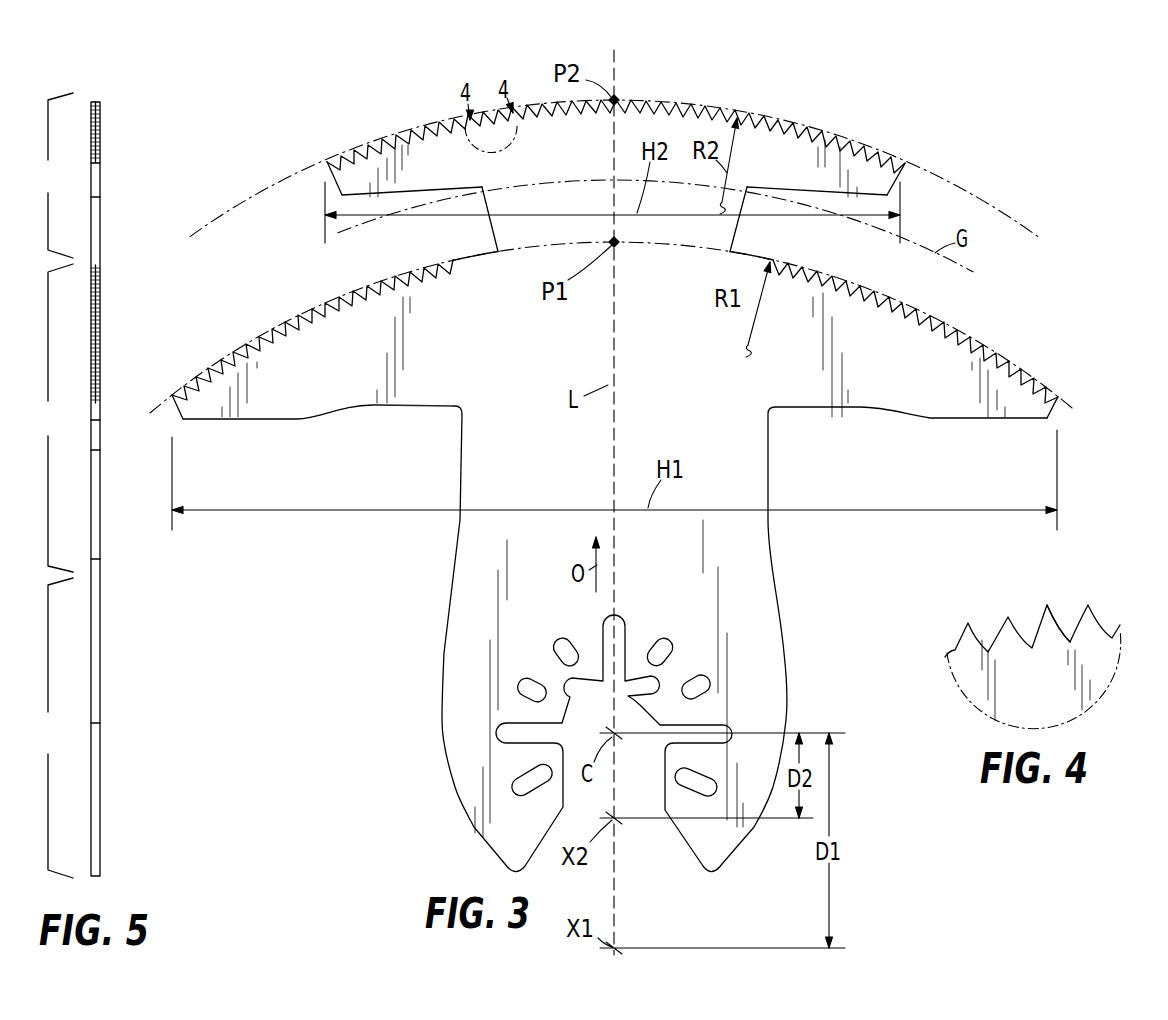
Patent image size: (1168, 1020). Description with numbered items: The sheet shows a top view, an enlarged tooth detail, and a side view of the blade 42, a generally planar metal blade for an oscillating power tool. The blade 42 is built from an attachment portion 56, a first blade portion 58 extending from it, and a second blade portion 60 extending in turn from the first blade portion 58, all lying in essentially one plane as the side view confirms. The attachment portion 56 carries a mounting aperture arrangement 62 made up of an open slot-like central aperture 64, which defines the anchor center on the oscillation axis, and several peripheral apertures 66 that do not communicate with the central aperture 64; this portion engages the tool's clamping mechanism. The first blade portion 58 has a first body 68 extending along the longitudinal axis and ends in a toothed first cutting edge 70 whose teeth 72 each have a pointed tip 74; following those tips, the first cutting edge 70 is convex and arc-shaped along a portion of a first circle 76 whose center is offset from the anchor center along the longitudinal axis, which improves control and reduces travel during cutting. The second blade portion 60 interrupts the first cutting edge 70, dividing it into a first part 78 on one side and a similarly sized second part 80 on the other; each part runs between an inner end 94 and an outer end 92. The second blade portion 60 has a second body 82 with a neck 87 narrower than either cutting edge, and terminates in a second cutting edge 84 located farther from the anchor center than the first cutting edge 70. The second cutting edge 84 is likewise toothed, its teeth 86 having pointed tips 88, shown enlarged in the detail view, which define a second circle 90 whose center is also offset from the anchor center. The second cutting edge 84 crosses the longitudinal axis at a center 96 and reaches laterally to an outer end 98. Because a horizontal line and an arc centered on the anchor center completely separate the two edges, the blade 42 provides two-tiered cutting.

In FIG. 3, the blade 42 is at (778, 80).
In FIG. 5, the blade 42 is at (105, 95).
In FIG. 3, the attachment portion 56 is at (470, 723).
In FIG. 5, the attachment portion 56 is at (55, 728).
In FIG. 3, the first blade portion 58 is at (360, 368).
In FIG. 5, the first blade portion 58 is at (55, 418).
In FIG. 3, the second blade portion 60 is at (805, 168).
In FIG. 5, the second blade portion 60 is at (55, 175).
In FIG. 3, the mounting aperture arrangement 62 is at (688, 650).
In FIG. 3, the central aperture 64 is at (652, 704).
In FIG. 3, the peripheral apertures 66 is at (532, 690).
In FIG. 3, the first body 68 is at (542, 360).
In FIG. 3, the first cutting edge 70 is at (297, 322).
In FIG. 3, the teeth 72 is at (350, 293).
In FIG. 3, the pointed tip 74 is at (382, 287).
In FIG. 3, the first circle 76 is at (1068, 405).
In FIG. 3, the first part 78 is at (218, 360).
In FIG. 3, the second part 80 is at (950, 323).
In FIG. 3, the second body 82 is at (494, 236).
In FIG. 3, the second cutting edge 84 is at (373, 140).
In FIG. 3, the teeth 86 is at (407, 152).
In FIG. 4, the teeth 86 is at (1012, 633).
In FIG. 3, the neck 87 is at (737, 238).
In FIG. 3, the pointed tip 88 is at (437, 133).
In FIG. 4, the pointed tip 88 is at (1047, 605).
In FIG. 3, the second circle 90 is at (990, 205).
In FIG. 3, the outer end 92 is at (1059, 393).
In FIG. 3, the inner end 94 is at (780, 260).
In FIG. 3, the center 96 is at (617, 99).
In FIG. 3, the outer end 98 is at (907, 162).